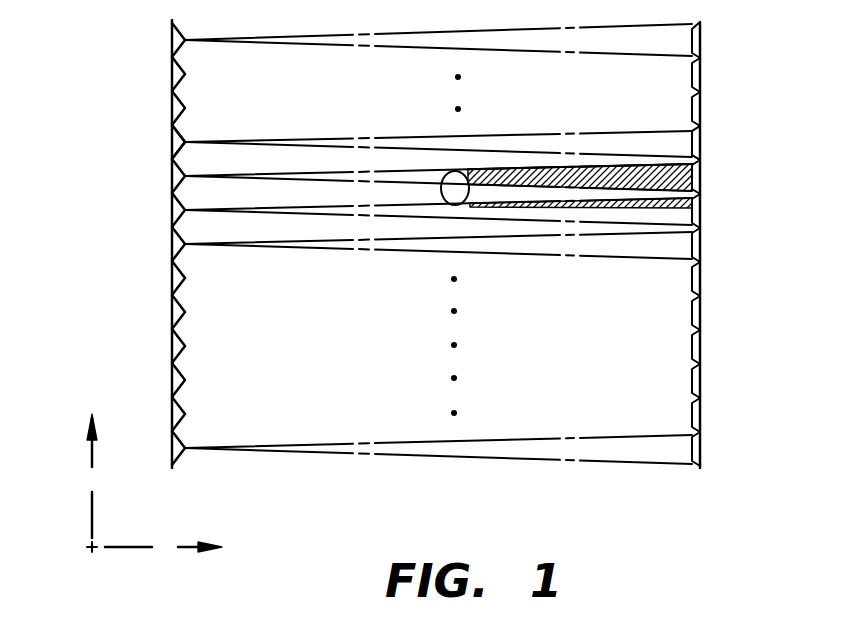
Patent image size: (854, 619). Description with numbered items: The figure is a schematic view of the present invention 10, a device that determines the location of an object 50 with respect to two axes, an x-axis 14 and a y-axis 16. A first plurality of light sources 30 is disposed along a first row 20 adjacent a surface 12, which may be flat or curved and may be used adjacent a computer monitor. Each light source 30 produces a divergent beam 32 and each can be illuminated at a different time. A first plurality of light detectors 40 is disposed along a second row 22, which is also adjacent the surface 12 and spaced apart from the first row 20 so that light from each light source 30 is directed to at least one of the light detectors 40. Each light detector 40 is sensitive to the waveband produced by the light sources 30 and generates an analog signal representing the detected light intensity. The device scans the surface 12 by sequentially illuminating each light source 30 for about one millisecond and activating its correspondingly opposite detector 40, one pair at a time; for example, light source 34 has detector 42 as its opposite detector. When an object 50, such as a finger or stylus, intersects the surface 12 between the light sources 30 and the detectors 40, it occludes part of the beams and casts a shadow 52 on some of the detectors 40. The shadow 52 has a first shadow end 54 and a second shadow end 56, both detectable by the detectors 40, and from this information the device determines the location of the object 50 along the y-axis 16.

The present invention 10 is at (134, 58).
The surface 12 is at (434, 267).
The x-axis 14 is at (117, 549).
The y-axis 16 is at (90, 520).
The first row 20 is at (215, 267).
The second row 22 is at (657, 268).
The light sources 30 is at (183, 76).
The divergent beam 32 is at (498, 40).
The light source 34 is at (183, 142).
The light detectors 40 is at (692, 106).
The detector 42 is at (692, 143).
The object 50 is at (454, 182).
The shadow 52 is at (633, 180).
The first shadow end 54 is at (702, 161).
The second shadow end 56 is at (702, 207).